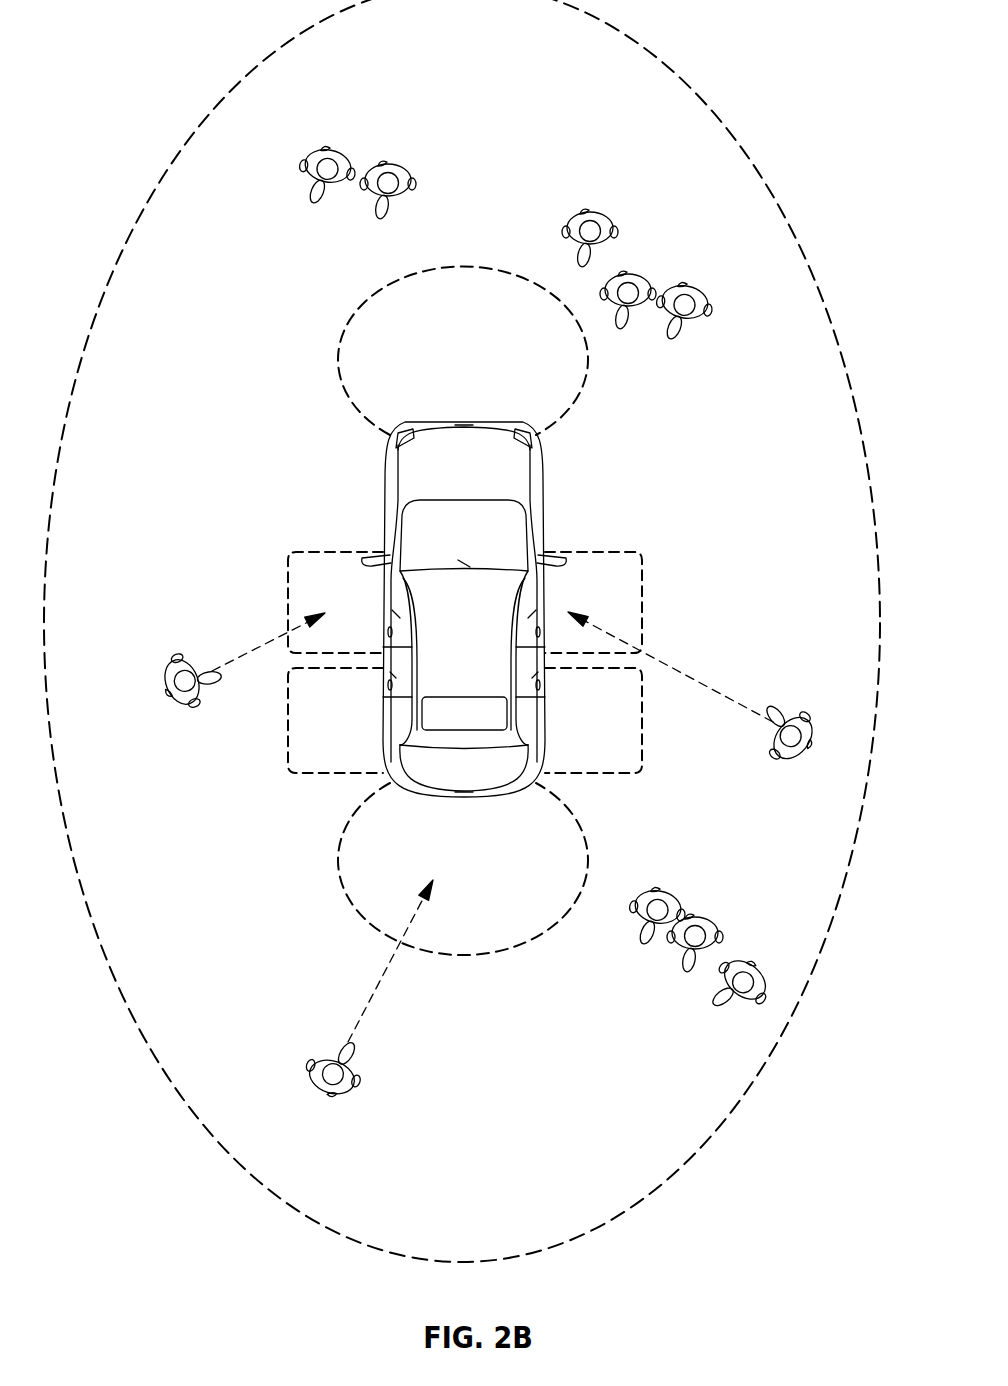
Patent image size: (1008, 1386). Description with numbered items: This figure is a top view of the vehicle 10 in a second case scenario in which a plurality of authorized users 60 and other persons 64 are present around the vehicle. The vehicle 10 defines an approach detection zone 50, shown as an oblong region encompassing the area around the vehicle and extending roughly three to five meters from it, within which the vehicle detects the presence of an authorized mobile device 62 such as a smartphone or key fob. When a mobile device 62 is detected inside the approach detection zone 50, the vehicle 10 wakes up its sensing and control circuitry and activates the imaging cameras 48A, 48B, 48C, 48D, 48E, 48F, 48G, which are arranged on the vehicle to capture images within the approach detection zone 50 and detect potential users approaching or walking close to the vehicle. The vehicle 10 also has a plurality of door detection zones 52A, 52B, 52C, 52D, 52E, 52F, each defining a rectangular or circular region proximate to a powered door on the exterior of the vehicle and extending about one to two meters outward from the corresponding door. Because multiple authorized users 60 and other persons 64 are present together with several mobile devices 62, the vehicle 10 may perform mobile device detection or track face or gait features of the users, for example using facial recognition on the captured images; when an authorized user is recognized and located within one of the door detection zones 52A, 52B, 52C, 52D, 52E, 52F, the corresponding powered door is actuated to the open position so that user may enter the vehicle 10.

The vehicle 10 is at (515, 487).
The imaging camera 48A is at (398, 615).
The imaging camera 48B is at (530, 615).
The imaging camera 48C is at (395, 675).
The imaging camera 48D is at (533, 675).
The imaging camera 48E is at (466, 428).
The imaging camera 48F is at (465, 795).
The imaging camera 48G is at (466, 567).
The approach detection zone 50 is at (757, 170).
The door detection zone 52A is at (288, 576).
The door detection zone 52B is at (640, 576).
The door detection zone 52C is at (288, 748).
The door detection zone 52D is at (640, 748).
The door detection zone 52E is at (375, 293).
The door detection zone 52F is at (498, 958).
The authorized user 60 is at (168, 706).
The mobile device 62 is at (198, 660).
The other persons 64 is at (338, 150).